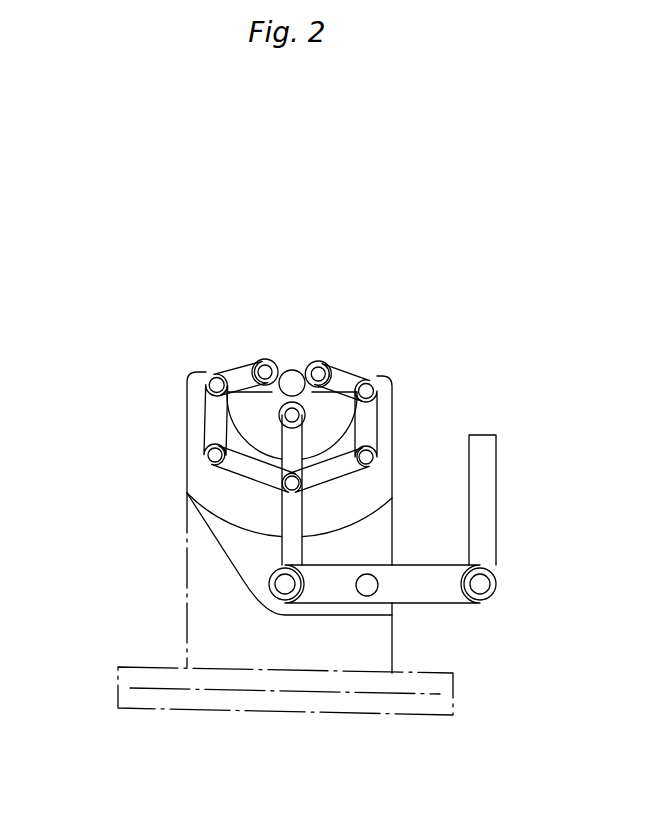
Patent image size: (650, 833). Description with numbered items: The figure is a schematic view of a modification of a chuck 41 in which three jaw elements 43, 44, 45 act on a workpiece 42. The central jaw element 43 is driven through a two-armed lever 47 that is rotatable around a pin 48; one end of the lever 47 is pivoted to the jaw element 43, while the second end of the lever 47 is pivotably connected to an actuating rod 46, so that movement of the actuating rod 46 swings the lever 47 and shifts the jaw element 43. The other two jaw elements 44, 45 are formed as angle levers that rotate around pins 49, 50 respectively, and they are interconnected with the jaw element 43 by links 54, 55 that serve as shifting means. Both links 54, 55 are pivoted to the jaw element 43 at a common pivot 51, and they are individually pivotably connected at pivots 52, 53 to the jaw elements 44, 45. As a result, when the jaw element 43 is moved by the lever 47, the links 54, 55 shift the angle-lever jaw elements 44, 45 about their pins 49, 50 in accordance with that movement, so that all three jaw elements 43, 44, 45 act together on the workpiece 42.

The chuck 41 is at (104, 305).
The workpiece 42 is at (293, 370).
The jaw element 43 is at (297, 455).
The jaw element 44 is at (242, 372).
The jaw element 45 is at (337, 373).
The actuating rod 46 is at (483, 442).
The two-armed lever 47 is at (430, 598).
The pin 48 is at (372, 582).
The pin 49 is at (215, 372).
The pin 50 is at (368, 378).
The pivot 51 is at (282, 488).
The pivot 52 is at (237, 473).
The pivot 53 is at (322, 468).
The link 54 is at (242, 474).
The link 55 is at (322, 478).